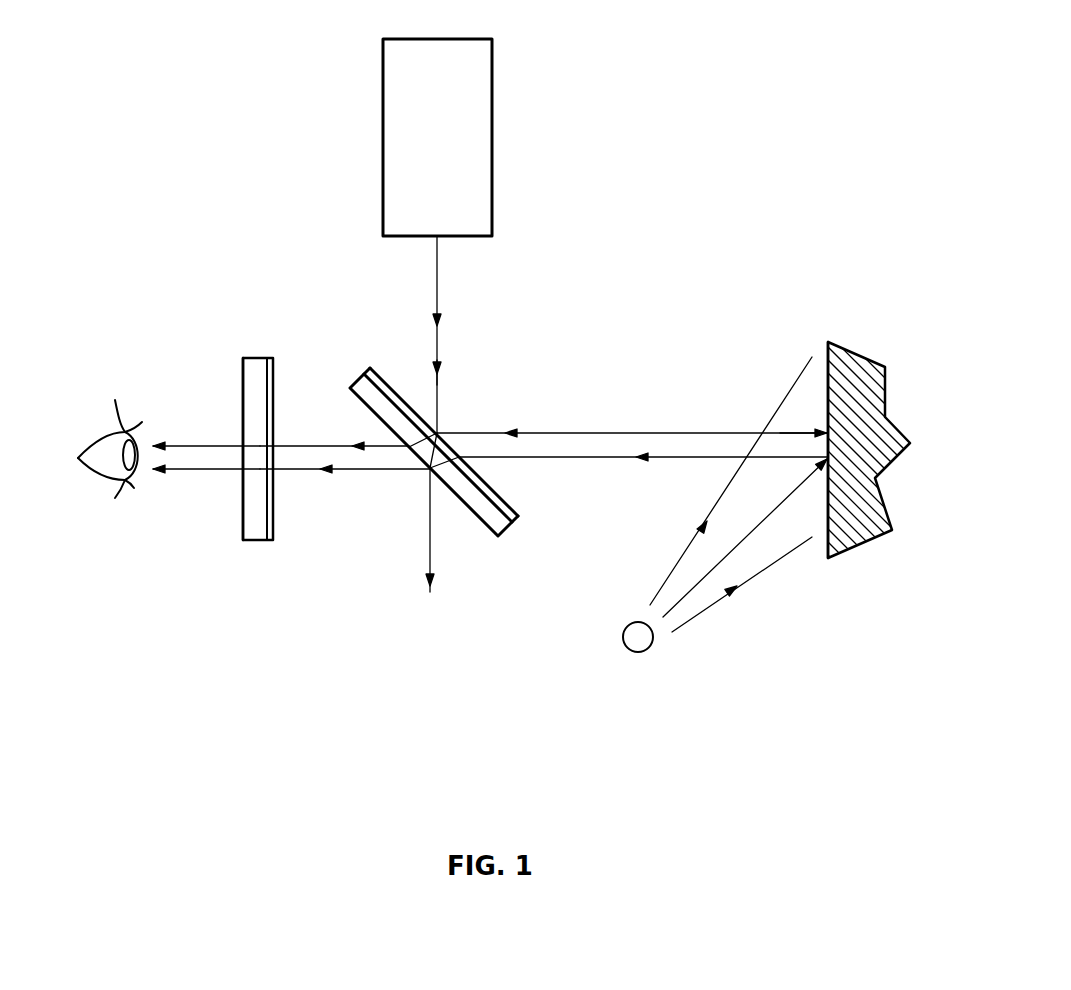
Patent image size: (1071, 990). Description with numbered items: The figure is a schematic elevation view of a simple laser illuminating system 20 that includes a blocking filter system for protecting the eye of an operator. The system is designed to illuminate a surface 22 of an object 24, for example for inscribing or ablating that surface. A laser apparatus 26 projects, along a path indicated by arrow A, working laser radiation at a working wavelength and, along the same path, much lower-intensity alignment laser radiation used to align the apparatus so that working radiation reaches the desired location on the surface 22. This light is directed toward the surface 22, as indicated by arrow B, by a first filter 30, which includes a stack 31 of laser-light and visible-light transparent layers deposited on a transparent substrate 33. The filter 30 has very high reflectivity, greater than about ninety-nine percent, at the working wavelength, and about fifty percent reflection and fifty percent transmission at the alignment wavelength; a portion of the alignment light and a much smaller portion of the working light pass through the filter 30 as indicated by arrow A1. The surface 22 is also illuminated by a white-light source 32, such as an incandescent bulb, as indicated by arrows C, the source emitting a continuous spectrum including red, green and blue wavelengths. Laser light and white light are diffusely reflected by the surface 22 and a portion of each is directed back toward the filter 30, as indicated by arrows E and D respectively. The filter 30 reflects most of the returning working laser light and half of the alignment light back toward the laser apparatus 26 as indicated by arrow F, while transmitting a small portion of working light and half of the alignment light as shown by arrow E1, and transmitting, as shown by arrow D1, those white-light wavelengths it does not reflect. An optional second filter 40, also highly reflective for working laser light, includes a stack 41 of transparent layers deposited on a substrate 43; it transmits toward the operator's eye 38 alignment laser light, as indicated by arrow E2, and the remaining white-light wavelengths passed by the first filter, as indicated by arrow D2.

The laser illuminating system 20 is at (343, 708).
The surface 22 is at (826, 366).
The object 24 is at (900, 490).
The laser apparatus 26 is at (506, 121).
The first filter 30 is at (517, 538).
The stack 31 is at (389, 371).
The white-light source 32 is at (638, 660).
The transparent substrate 33 is at (485, 514).
The operator's eye 38 is at (96, 472).
The filter 40 is at (238, 538).
The stack 41 is at (257, 532).
The substrate 43 is at (252, 365).
The path A is at (444, 323).
The arrow A1 is at (425, 584).
The arrow B is at (818, 431).
The arrows C is at (704, 523).
The arrow D is at (640, 459).
The arrow D1 is at (323, 474).
The arrow D2 is at (158, 475).
The arrow E is at (514, 432).
The arrow E1 is at (345, 438).
The arrow E2 is at (159, 443).
The arrow F is at (445, 372).